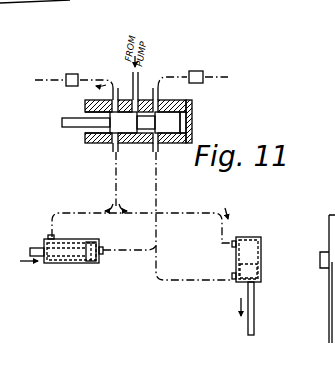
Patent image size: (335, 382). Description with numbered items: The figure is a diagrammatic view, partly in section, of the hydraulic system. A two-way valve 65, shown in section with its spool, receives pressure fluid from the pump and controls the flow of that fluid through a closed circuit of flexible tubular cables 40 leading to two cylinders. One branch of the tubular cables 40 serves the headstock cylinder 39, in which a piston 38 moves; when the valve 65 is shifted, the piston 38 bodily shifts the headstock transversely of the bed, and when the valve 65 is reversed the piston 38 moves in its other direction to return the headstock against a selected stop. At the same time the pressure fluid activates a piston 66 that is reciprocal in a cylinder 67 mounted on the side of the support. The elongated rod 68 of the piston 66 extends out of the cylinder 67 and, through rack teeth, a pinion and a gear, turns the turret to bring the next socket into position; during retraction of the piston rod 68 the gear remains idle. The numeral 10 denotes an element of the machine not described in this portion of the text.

The brake system 10 is at (12, 2).
The two-way valve 65 is at (192, 104).
The flexible tubular cables 40 is at (118, 152).
The headstock cylinder 39 is at (65, 263).
The piston 38 is at (87, 262).
The cylinder 67 is at (247, 237).
The piston 66 is at (255, 262).
The piston rod 68 is at (256, 297).